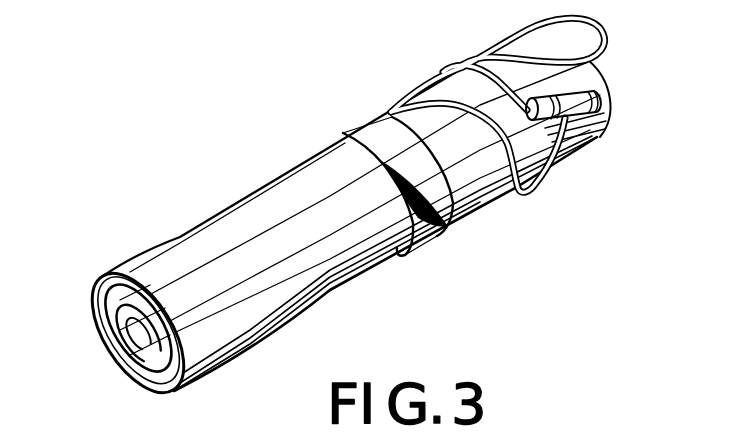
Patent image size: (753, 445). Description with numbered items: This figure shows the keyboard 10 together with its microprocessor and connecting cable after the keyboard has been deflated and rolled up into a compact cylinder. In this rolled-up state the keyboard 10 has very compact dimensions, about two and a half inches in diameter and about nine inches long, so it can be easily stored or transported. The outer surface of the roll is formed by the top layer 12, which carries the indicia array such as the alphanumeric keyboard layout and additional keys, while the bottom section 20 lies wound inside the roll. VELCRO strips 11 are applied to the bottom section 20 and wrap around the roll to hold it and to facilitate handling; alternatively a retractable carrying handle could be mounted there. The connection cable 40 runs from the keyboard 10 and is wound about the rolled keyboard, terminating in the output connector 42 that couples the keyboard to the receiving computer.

The keyboard 10 is at (293, 128).
The VELCRO strips 11 is at (387, 117).
The top layer 12 is at (220, 237).
The bottom section 20 is at (110, 343).
The connection cable 40 is at (465, 62).
The output connector 42 is at (600, 137).